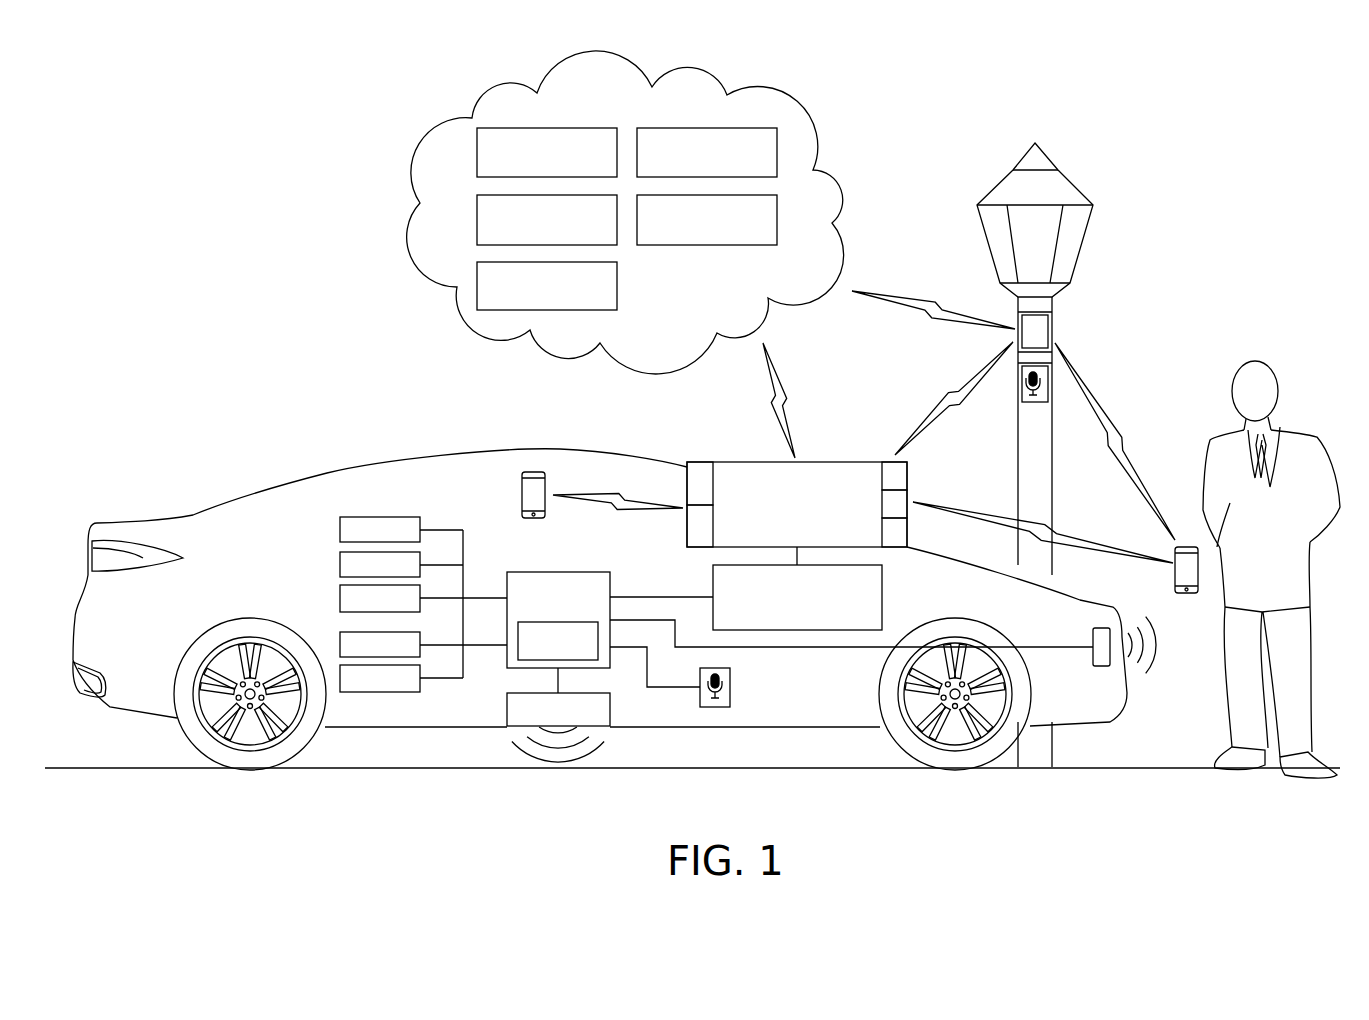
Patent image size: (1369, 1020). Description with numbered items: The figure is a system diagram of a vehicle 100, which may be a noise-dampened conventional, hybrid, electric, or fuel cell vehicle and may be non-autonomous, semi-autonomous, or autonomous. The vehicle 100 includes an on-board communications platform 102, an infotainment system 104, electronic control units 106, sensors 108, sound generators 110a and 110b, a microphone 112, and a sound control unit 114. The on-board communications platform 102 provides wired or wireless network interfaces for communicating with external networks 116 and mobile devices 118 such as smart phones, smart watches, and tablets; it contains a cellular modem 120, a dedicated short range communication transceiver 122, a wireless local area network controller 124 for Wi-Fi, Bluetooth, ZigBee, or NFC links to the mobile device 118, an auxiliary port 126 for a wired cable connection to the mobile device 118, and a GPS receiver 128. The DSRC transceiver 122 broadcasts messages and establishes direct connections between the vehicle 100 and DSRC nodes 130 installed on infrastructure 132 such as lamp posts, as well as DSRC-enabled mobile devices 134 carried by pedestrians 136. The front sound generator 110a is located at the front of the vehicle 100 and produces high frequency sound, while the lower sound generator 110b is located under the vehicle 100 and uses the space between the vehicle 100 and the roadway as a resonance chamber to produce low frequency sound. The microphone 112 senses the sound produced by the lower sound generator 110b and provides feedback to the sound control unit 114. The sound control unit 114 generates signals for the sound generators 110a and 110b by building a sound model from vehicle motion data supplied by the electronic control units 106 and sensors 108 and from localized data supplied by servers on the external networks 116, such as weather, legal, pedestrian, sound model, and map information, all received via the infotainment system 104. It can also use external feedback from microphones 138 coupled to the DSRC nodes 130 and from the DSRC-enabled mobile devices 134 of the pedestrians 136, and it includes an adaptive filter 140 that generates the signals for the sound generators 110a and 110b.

The vehicle 100 is at (150, 522).
The on-board communications platform 102 is at (835, 461).
The infotainment system 104 is at (882, 588).
The electronic control units 106 is at (377, 517).
The sensors 108 is at (340, 638).
The front sound generator 110a is at (1110, 637).
The lower sound generator 110b is at (595, 718).
The microphone 112 is at (730, 688).
The sound control unit 114 is at (565, 572).
The external networks 116 is at (827, 150).
The mobile devices 118 is at (532, 472).
The cellular modem 120 is at (907, 475).
The dedicated short range communication (DSRC) transceiver 122 is at (907, 498).
The wireless local area network (WLAN) controller 124 is at (688, 482).
The auxiliary port 126 is at (688, 528).
The GPS receiver 128 is at (907, 533).
The DSRC nodes 130 is at (1052, 327).
The infrastructure 132 is at (1065, 180).
The DSRC-enabled mobile devices 134 is at (1183, 547).
The pedestrians 136 is at (1305, 425).
The microphones 138 is at (1052, 383).
The adaptive filter 140 is at (541, 652).